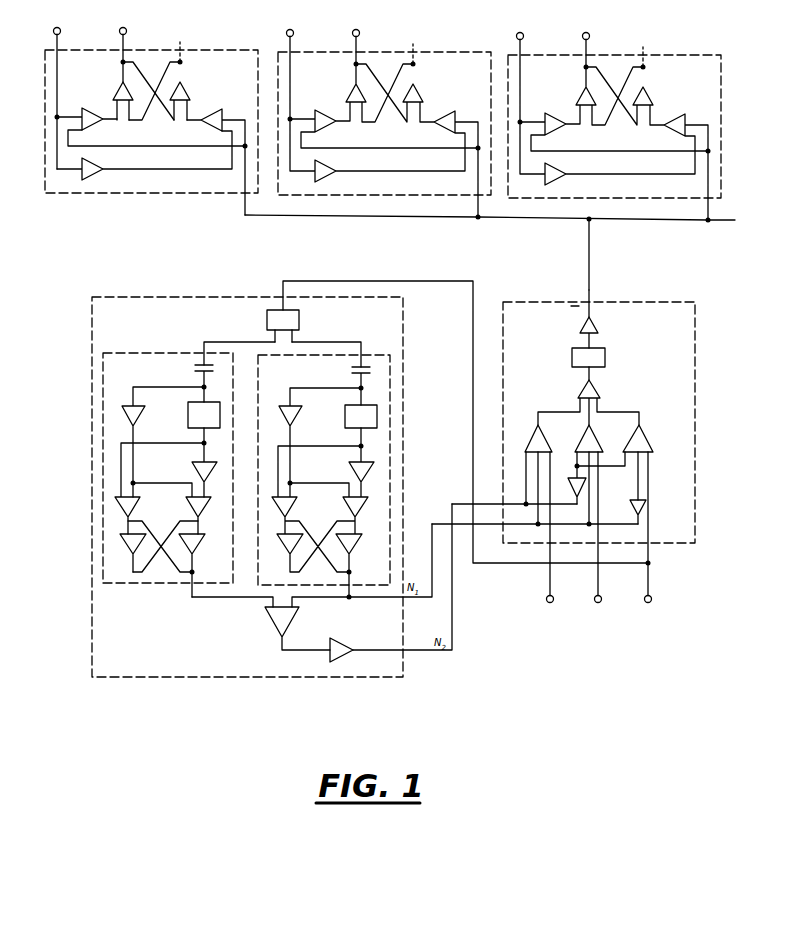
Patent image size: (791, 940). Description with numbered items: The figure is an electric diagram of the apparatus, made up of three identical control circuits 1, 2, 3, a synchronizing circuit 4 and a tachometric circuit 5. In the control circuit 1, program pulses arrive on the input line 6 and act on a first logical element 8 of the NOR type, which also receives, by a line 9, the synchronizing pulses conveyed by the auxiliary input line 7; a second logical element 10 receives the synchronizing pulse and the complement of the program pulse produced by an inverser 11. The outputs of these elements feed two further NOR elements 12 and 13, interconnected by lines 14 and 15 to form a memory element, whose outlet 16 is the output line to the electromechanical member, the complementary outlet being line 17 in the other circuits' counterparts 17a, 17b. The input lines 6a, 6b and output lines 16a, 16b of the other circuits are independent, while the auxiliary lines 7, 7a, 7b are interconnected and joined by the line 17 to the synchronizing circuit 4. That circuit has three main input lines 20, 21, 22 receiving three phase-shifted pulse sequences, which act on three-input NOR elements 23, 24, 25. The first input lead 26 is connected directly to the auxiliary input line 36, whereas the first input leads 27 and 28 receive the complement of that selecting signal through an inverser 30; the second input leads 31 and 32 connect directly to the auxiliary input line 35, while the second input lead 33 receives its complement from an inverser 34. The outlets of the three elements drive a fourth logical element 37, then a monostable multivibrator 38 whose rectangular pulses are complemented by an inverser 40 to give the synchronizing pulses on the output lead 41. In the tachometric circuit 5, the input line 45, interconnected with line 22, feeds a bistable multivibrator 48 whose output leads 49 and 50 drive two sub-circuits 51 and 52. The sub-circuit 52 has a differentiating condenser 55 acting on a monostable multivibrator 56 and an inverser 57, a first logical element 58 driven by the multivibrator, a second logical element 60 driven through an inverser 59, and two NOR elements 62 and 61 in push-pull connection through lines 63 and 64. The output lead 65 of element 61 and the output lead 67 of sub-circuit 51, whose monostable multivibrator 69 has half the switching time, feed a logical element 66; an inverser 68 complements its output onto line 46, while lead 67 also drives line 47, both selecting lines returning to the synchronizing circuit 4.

The control circuit 1 is at (146, 117).
The control circuit 2 is at (370, 117).
The control circuit 3 is at (600, 120).
The synchronizing circuit 4 is at (537, 300).
The tachometric circuit 5 is at (181, 297).
The input line 6 is at (59, 43).
The input line 6a is at (288, 46).
The input line 6b is at (518, 47).
The auxiliary input line 7 is at (244, 206).
The auxiliary input line 7a is at (480, 208).
The auxiliary input line 7b is at (712, 209).
The first logical element 8 is at (84, 110).
The line 9 is at (155, 147).
The second logical element 10 is at (220, 111).
The inverser 11 is at (105, 173).
The logical element 12 is at (114, 86).
The logical element 13 is at (189, 88).
The line 14 is at (126, 60).
The line 15 is at (179, 60).
The outlet 16 is at (121, 38).
The output line 16a is at (358, 43).
The output line 16b is at (590, 45).
The line 17 is at (188, 46).
The line 17a is at (416, 46).
The line 17b is at (650, 48).
The main input line 20 is at (548, 583).
The main input line 21 is at (597, 584).
The main input line 22 is at (647, 584).
The logical element 23 is at (533, 431).
The logical element 24 is at (597, 446).
The logical element 25 is at (647, 446).
The first input lead 26 is at (525, 467).
The first input lead 27 is at (575, 462).
The first input lead 28 is at (652, 468).
The inverser 30 is at (575, 468).
The second input lead 31 is at (530, 488).
The second input lead 32 is at (592, 509).
The second input lead 33 is at (645, 491).
The inverser 34 is at (632, 506).
The auxiliary input line 35 is at (495, 528).
The auxiliary input line 36 is at (480, 504).
The fourth logical element 37 is at (602, 391).
The monostable multivibrator 38 is at (606, 359).
The inverser 40 is at (600, 323).
The output lead 41 is at (591, 297).
The input line 45 is at (360, 281).
The output lead 46 is at (432, 651).
The output lead 47 is at (428, 598).
The bistable multivibrator 48 is at (301, 316).
The output lead 49 is at (350, 343).
The output lead 50 is at (218, 342).
The sub-circuit 51 is at (380, 355).
The sub-circuit 52 is at (115, 353).
The differentiating condenser 55 is at (193, 369).
The monostable multivibrator 56 is at (214, 402).
The inverser 57 is at (146, 413).
The first logical element 58 is at (140, 501).
The inverser 59 is at (192, 469).
The second logical element 60 is at (186, 507).
The logical element 61 is at (201, 549).
The logical element 62 is at (126, 548).
The line 63 is at (140, 583).
The line 64 is at (181, 583).
The output lead 65 is at (215, 599).
The logical element 66 is at (270, 619).
The output lead 67 is at (320, 599).
The inverser 68 is at (345, 645).
The monostable multivibrator 69 is at (371, 403).